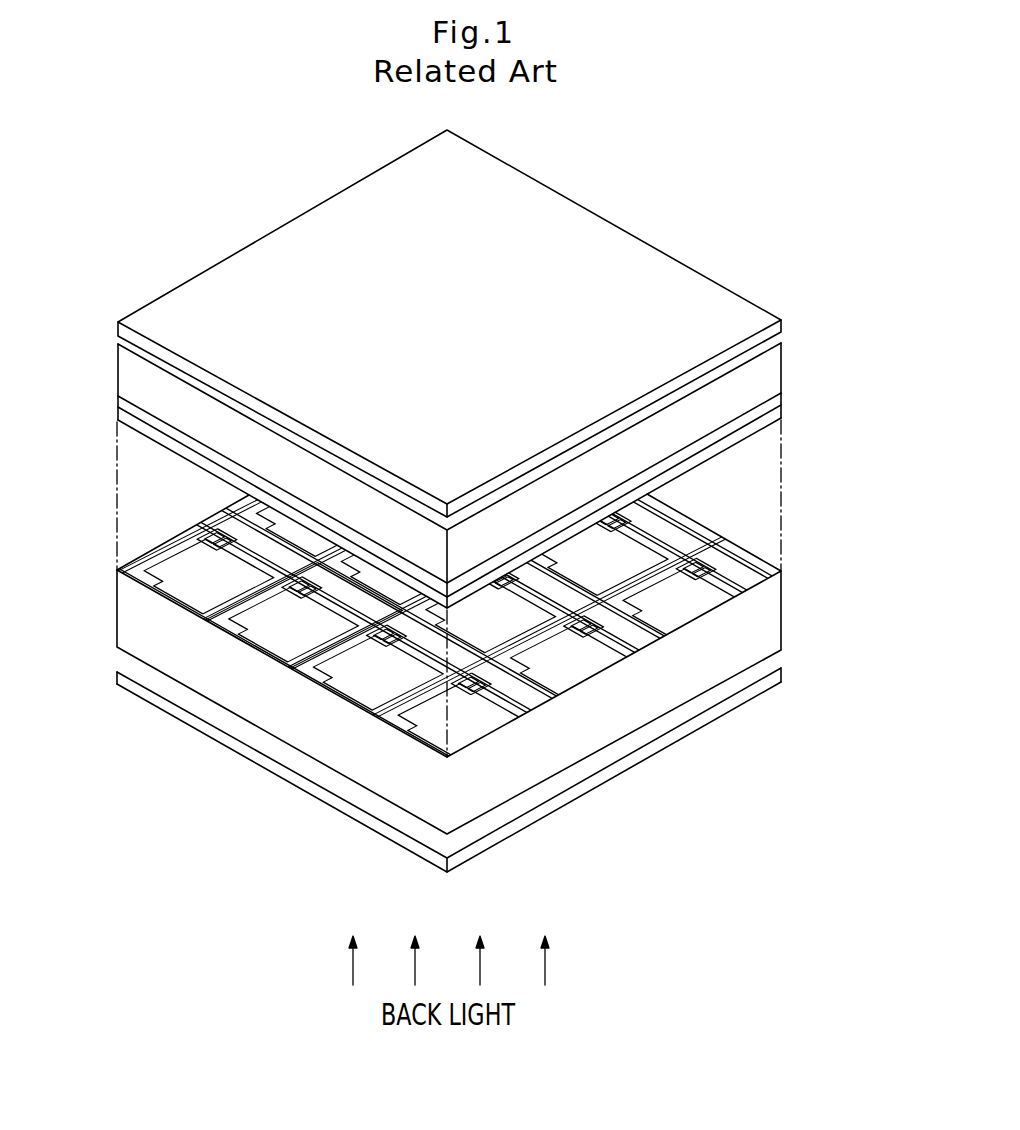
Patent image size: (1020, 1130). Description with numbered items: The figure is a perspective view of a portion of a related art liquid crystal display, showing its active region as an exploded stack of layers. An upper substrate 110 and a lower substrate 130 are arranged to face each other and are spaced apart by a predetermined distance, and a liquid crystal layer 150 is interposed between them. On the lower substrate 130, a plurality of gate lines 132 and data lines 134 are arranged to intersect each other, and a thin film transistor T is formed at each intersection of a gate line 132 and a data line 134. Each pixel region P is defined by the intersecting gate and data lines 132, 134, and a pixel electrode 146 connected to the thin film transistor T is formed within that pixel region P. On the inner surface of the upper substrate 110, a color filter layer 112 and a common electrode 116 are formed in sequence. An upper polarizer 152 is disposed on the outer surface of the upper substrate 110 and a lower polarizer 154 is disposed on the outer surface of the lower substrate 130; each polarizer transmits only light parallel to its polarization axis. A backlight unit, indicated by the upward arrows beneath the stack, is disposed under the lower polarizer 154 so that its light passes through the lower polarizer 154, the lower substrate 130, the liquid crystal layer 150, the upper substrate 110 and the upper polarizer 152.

The upper substrate 110 is at (481, 466).
The color filter layer 112 is at (782, 392).
The common electrode 116 is at (781, 417).
The lower substrate 130 is at (112, 572).
The gate line 132 is at (410, 627).
The data line 134 is at (400, 692).
The pixel electrode 146 is at (487, 694).
The liquid crystal layer 150 is at (112, 424).
The upper polarizer 152 is at (712, 286).
The lower polarizer 154 is at (693, 730).
The pixel region P is at (223, 641).
The thin film transistor T is at (487, 690).